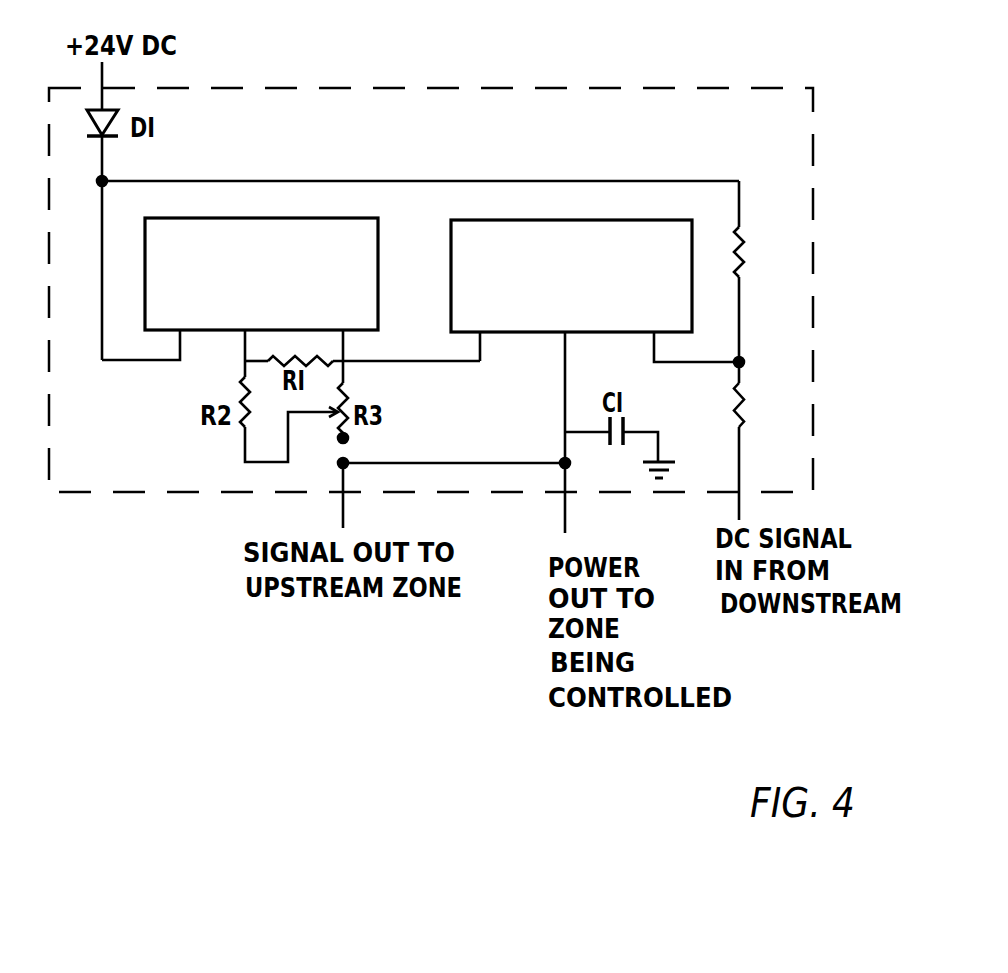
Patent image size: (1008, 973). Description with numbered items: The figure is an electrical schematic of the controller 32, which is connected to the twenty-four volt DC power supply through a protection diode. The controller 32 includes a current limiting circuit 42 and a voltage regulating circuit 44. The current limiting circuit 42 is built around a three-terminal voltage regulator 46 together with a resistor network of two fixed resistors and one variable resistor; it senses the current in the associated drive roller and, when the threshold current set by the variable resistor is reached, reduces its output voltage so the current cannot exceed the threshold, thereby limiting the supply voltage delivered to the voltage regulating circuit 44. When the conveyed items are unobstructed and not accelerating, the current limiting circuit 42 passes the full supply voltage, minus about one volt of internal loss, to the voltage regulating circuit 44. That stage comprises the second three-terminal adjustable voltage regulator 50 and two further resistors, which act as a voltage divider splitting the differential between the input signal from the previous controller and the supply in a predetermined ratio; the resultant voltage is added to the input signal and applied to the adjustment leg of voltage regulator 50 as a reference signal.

The controller 32 is at (455, 87).
The current limiting circuit 42 is at (168, 383).
The voltage regulating circuit 44 is at (706, 162).
The 3-terminal voltage regulator 46 is at (357, 219).
The second 3-terminal adjustable voltage regulator 50 is at (483, 220).